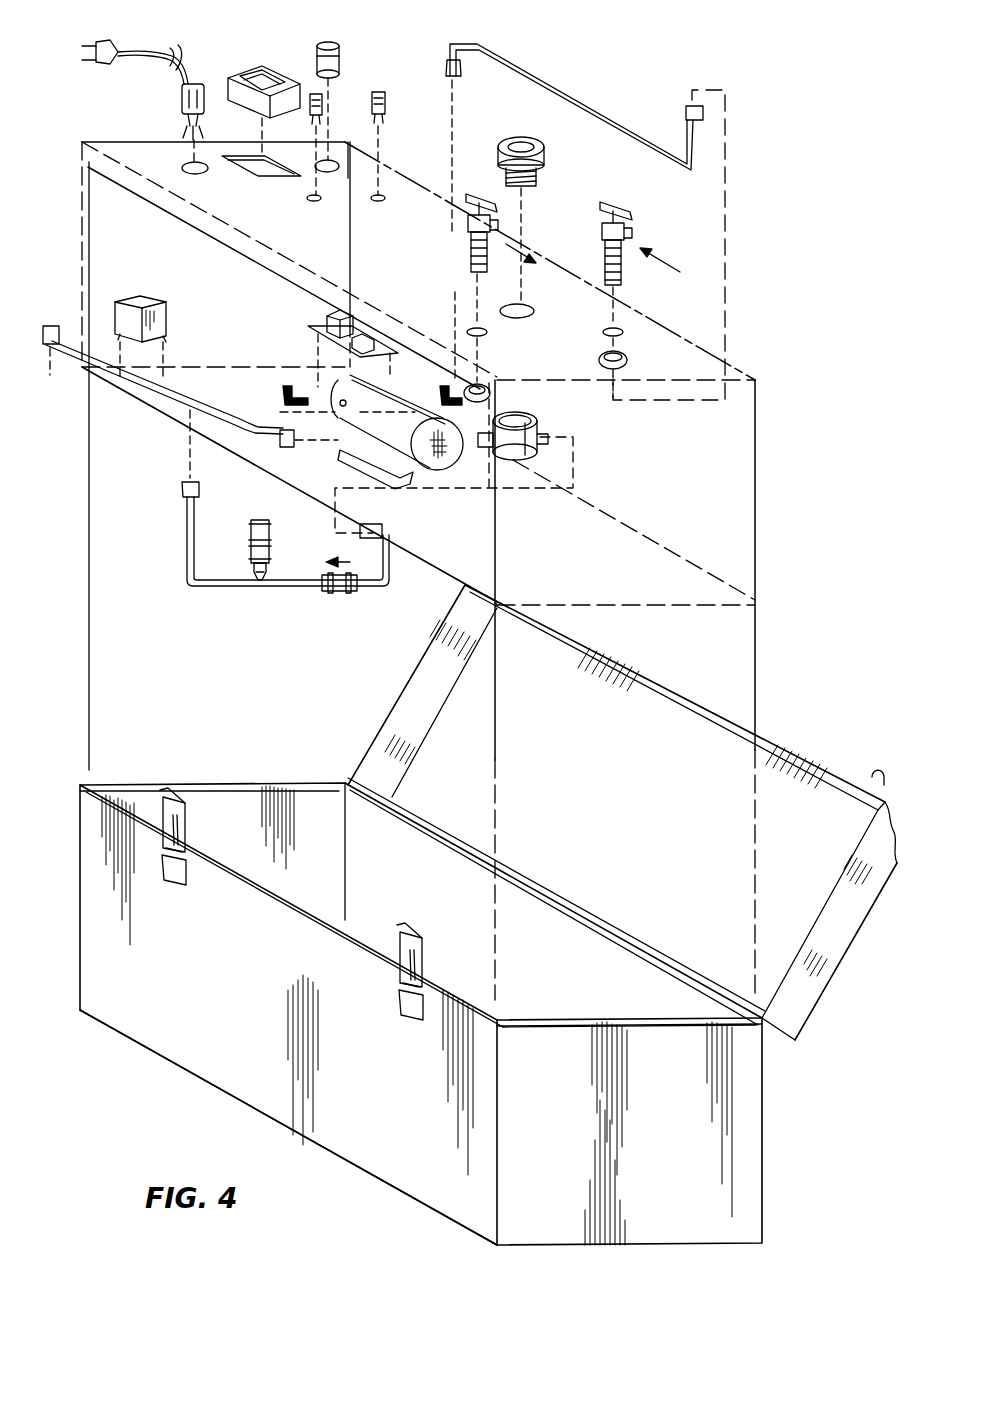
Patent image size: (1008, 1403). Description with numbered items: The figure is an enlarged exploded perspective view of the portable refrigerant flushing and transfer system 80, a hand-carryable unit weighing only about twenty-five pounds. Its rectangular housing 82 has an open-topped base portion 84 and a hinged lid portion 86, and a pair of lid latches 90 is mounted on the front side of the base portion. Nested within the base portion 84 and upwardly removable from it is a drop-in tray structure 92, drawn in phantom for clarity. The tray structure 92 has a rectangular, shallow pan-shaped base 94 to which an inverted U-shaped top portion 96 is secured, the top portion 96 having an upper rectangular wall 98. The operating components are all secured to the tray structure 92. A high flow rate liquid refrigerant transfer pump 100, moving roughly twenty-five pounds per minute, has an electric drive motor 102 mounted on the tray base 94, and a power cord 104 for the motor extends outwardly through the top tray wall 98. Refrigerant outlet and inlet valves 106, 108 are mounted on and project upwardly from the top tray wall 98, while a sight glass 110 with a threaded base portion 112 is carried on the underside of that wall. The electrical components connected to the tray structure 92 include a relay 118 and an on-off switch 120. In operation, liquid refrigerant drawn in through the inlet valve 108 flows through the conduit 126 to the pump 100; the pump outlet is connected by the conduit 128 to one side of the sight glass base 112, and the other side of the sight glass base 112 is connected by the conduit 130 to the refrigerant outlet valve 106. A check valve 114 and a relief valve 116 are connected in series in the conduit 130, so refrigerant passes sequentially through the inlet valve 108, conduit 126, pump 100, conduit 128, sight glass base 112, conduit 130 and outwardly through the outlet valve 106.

The portable refrigerant flushing and transfer system 80 is at (220, 604).
The rectangular housing 82 is at (80, 956).
The open-topped base portion 84 is at (252, 1070).
The hinged lid portion 86 is at (408, 690).
The lid latches 90 is at (186, 830).
The drop-in tray structure 92 is at (90, 259).
The pan-shaped base 94 is at (668, 600).
The inverted U-shaped top portion 96 is at (84, 222).
The upper rectangular wall 98 is at (676, 368).
The liquid refrigerant transfer pump 100 is at (343, 406).
The electric drive motor 102 is at (440, 472).
The power cord 104 is at (134, 52).
The refrigerant outlet valve 106 is at (464, 238).
The refrigerant inlet valve 108 is at (601, 232).
The sight glass 110 is at (545, 147).
The threaded base portion 112 is at (540, 420).
The check valve 114 is at (346, 592).
The relief valve 116 is at (259, 519).
The relay 118 is at (160, 304).
The on-off switch 120 is at (262, 68).
The conduit 126 is at (555, 86).
The conduit 128 is at (192, 404).
The conduit 130 is at (240, 587).